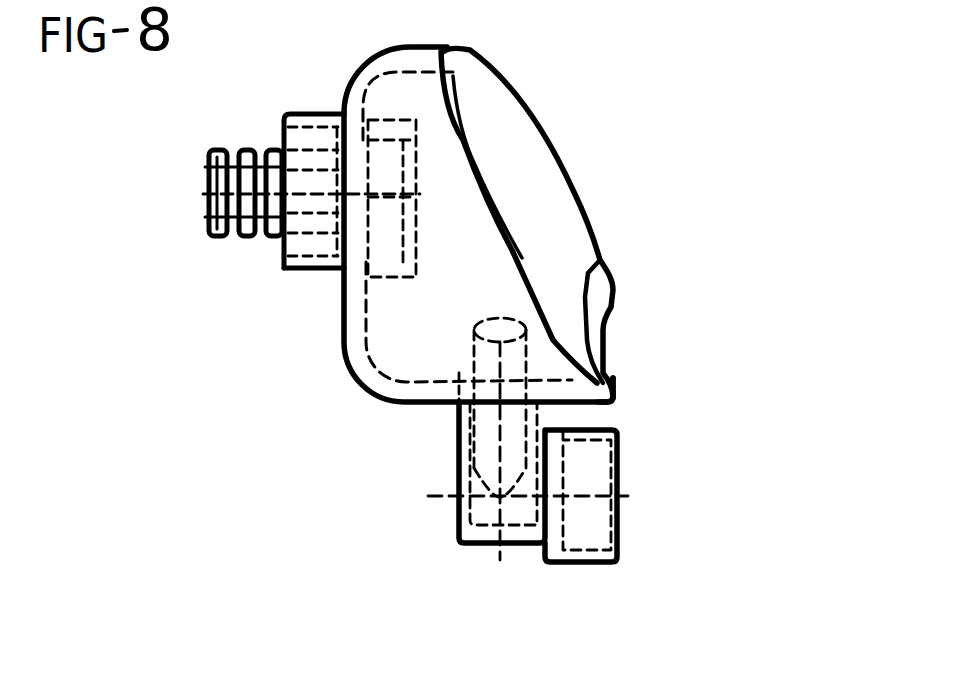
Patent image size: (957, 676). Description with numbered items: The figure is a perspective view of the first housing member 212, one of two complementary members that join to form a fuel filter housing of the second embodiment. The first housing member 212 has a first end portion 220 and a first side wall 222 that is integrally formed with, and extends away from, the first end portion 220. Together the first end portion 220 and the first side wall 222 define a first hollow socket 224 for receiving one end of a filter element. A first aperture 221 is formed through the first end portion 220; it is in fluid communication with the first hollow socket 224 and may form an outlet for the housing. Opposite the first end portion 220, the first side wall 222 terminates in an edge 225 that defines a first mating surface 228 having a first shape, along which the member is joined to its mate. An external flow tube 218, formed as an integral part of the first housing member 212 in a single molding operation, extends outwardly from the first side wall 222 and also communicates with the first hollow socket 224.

The first housing member 212 is at (436, 327).
The external flow tube 218 is at (452, 528).
The first end portion 220 is at (343, 312).
The first aperture 221 is at (353, 214).
The first side wall 222 is at (436, 412).
The first hollow socket 224 is at (517, 190).
The edge 225 is at (610, 384).
The first mating surface 228 is at (630, 222).